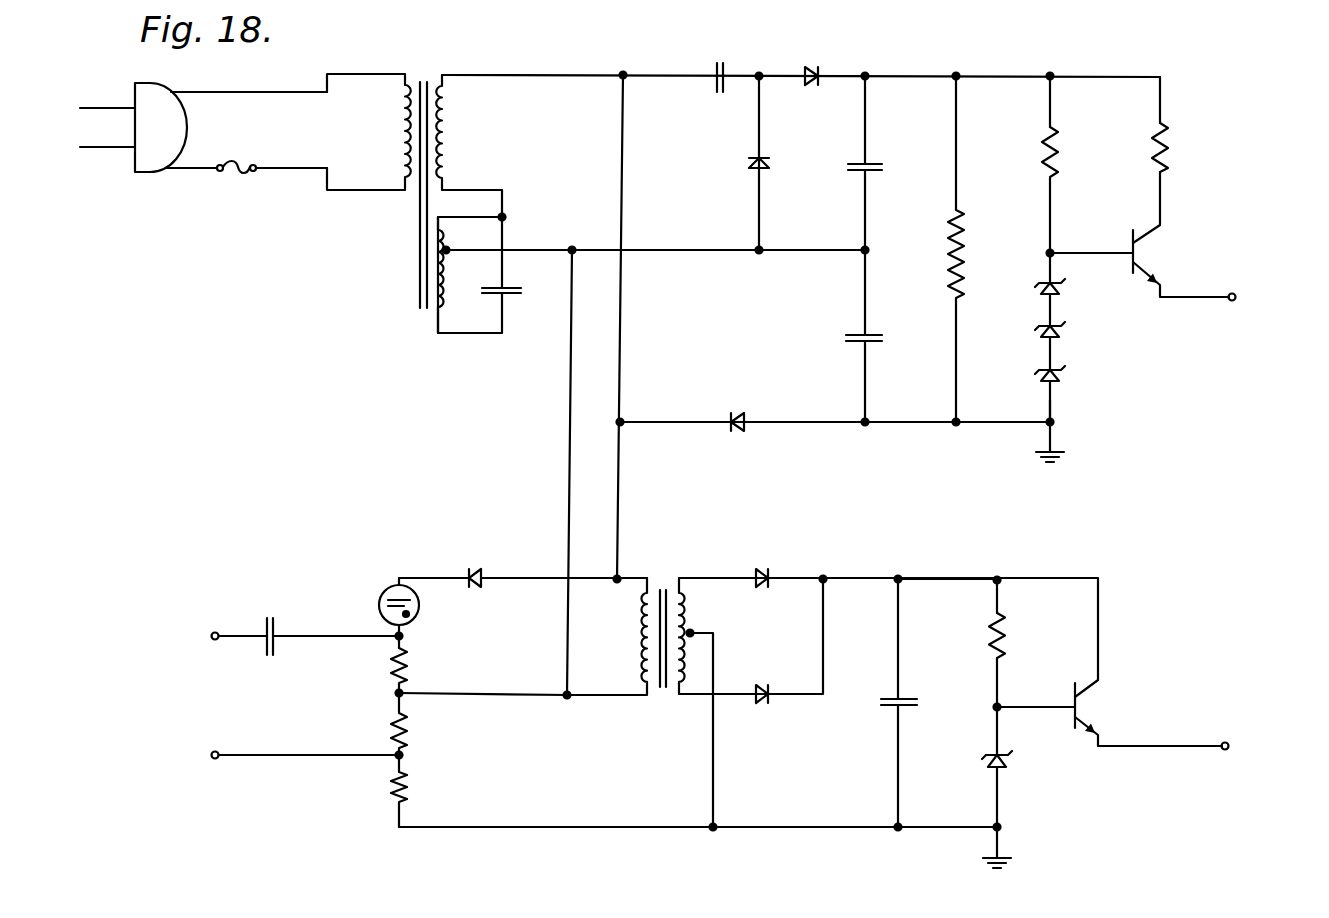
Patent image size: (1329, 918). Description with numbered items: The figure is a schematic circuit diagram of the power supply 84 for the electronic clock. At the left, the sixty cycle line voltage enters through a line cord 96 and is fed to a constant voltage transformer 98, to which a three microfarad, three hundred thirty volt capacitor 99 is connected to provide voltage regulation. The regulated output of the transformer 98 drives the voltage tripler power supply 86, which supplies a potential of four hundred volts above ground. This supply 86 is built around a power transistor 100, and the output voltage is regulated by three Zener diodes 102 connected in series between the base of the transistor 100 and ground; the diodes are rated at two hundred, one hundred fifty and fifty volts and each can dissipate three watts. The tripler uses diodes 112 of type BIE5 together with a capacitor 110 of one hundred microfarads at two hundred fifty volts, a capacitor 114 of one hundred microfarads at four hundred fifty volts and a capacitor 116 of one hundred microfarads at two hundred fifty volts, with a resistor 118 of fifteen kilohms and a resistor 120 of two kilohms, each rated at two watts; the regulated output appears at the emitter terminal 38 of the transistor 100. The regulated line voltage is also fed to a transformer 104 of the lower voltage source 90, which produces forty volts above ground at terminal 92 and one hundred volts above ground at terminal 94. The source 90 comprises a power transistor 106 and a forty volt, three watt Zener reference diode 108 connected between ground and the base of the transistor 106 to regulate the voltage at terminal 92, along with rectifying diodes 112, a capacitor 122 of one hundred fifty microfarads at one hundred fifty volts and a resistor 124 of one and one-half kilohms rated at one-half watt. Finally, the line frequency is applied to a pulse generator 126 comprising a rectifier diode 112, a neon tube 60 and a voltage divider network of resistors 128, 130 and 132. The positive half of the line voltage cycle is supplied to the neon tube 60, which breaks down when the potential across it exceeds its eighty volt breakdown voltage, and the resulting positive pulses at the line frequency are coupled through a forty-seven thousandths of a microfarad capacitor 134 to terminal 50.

The output terminal 38 is at (1236, 293).
The terminal 50 is at (212, 633).
The neon tube 60 is at (387, 589).
The power supply 84 is at (410, 325).
The voltage tripler power supply 86 is at (1057, 401).
The lower voltage source 90 is at (963, 570).
The terminal 92 is at (1226, 753).
The terminal 94 is at (213, 761).
The line cord 96 is at (196, 170).
The constant voltage transformer 98 is at (455, 129).
The capacitor 99 is at (490, 297).
The power transistor 100 is at (1147, 246).
The Zener diodes 102 is at (1062, 376).
The transformer 104 is at (665, 580).
The power transistor 106 is at (1096, 696).
The Zener reference diode 108 is at (1010, 766).
The capacitor 110 is at (722, 61).
The diodes 112 is at (813, 65).
The capacitor 114 is at (879, 162).
The capacitor 116 is at (878, 344).
The resistor 118 is at (1060, 156).
The resistor 120 is at (1172, 136).
The capacitor 122 is at (910, 698).
The resistor 124 is at (1007, 636).
The pulse generator 126 is at (496, 545).
The resistor 128 is at (409, 672).
The resistor 130 is at (409, 734).
The resistor 132 is at (409, 786).
The capacitor 134 is at (273, 619).